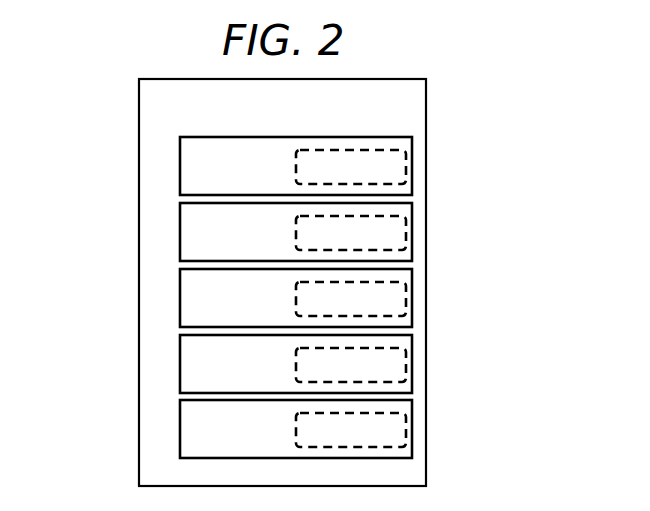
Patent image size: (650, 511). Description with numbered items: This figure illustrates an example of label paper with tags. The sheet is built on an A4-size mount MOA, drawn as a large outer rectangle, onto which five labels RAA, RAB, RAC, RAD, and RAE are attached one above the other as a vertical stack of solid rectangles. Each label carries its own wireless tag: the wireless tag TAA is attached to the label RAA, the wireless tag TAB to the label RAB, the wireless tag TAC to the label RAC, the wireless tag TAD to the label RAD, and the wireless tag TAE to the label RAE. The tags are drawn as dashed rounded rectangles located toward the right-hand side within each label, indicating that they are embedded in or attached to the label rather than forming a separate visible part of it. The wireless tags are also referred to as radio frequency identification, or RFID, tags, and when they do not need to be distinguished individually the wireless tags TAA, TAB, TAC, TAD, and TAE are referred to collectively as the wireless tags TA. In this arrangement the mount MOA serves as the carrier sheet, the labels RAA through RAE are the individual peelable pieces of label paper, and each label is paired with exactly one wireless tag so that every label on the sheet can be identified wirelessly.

The mount MOA is at (426, 106).
The label RAA is at (180, 170).
The label RAB is at (180, 236).
The label RAC is at (180, 302).
The label RAD is at (180, 368).
The label RAE is at (180, 433).
The wireless tag TAA is at (403, 162).
The wireless tag TAB is at (403, 228).
The wireless tag TAC is at (403, 294).
The wireless tag TAD is at (403, 360).
The wireless tag TAE is at (403, 425).